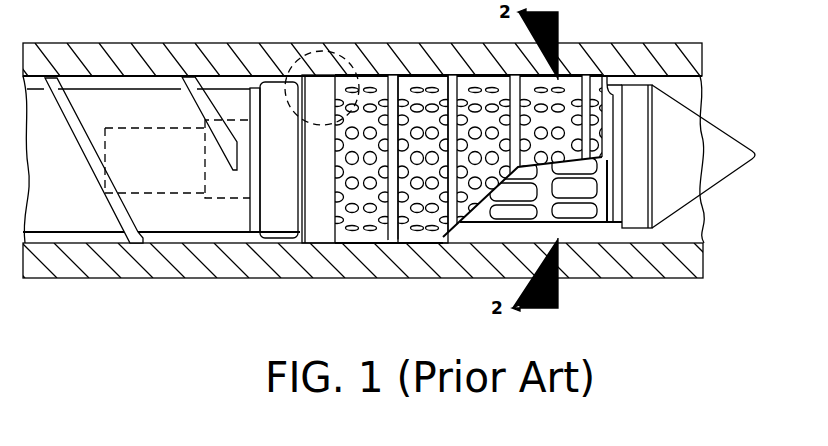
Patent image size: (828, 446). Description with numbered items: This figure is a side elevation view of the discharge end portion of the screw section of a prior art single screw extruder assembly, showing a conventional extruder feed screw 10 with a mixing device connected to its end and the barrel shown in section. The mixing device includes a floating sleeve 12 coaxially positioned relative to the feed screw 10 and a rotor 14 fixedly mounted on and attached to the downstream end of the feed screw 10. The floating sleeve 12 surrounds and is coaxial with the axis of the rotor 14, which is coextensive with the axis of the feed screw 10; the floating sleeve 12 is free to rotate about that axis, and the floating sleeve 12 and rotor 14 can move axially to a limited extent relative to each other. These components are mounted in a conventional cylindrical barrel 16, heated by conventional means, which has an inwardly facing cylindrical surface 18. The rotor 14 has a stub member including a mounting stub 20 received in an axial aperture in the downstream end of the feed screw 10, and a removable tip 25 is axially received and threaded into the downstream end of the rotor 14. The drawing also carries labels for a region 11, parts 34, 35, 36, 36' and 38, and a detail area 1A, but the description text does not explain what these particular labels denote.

The extruder feed screw 10 is at (152, 228).
The end plug 11 is at (218, 239).
The floating sleeve 12 is at (552, 80).
The rotor 14 is at (607, 208).
The cylindrical barrel 16 is at (111, 53).
The inwardly facing cylindrical surface 18 is at (121, 89).
The mounting stub 20 is at (188, 196).
The removable tip 25 is at (708, 138).
The spacer ring 34 is at (585, 73).
The perforated section 35 is at (455, 74).
The perforation 36 is at (350, 263).
The perforation 36' is at (383, 262).
The perforated screen 38 is at (368, 75).
The detail region 1A is at (334, 45).